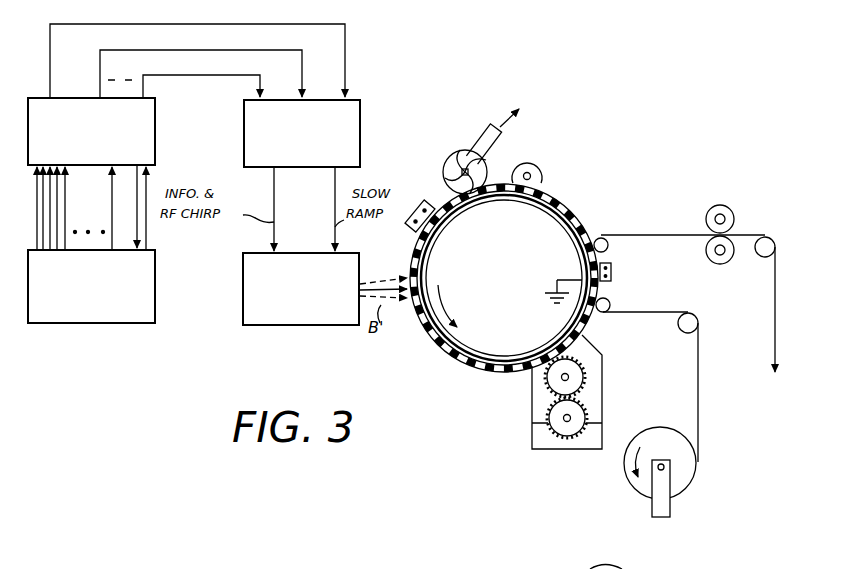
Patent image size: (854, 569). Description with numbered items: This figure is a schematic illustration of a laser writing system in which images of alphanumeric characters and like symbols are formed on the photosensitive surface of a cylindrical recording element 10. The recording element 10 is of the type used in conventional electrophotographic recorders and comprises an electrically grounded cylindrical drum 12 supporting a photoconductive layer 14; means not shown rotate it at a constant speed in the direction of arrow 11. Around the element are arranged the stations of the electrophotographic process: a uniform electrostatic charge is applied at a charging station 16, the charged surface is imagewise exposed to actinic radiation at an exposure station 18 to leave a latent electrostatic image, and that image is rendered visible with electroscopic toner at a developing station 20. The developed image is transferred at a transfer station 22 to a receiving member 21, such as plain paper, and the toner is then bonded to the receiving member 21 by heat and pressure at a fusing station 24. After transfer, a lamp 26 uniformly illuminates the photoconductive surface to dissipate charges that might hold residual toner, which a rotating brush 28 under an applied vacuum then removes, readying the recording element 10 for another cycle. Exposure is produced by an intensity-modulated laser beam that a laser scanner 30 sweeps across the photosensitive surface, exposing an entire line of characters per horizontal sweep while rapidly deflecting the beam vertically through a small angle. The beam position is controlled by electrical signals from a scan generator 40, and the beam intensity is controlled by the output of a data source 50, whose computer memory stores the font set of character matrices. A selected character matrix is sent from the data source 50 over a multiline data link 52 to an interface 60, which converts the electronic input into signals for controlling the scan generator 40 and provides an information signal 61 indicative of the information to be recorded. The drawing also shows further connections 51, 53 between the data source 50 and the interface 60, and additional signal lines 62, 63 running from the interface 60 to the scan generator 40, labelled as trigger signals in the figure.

The recording element 10 is at (579, 208).
The arrow 11 is at (445, 301).
The cylindrical drum 12 is at (547, 218).
The photoconductive layer 14 is at (593, 232).
The charging station 16 is at (410, 208).
The exposure station 18 is at (399, 268).
The developing station 20 is at (521, 396).
The receiving member 21 is at (690, 407).
The transfer station 22 is at (614, 273).
The fusing station 24 is at (742, 224).
The lamp 26 is at (541, 168).
The rotating brush 28 is at (452, 151).
The laser scanner 30 is at (243, 279).
The scan generator 40 is at (361, 121).
The data source 50 is at (157, 308).
The data line 51 is at (40, 232).
The multiline data link 52 is at (31, 215).
The control lines 53 is at (138, 228).
The interface 60 is at (63, 97).
The information signal 61 is at (263, 24).
The C.TRIG line 62 is at (263, 75).
The L.TRIG line 63 is at (263, 50).